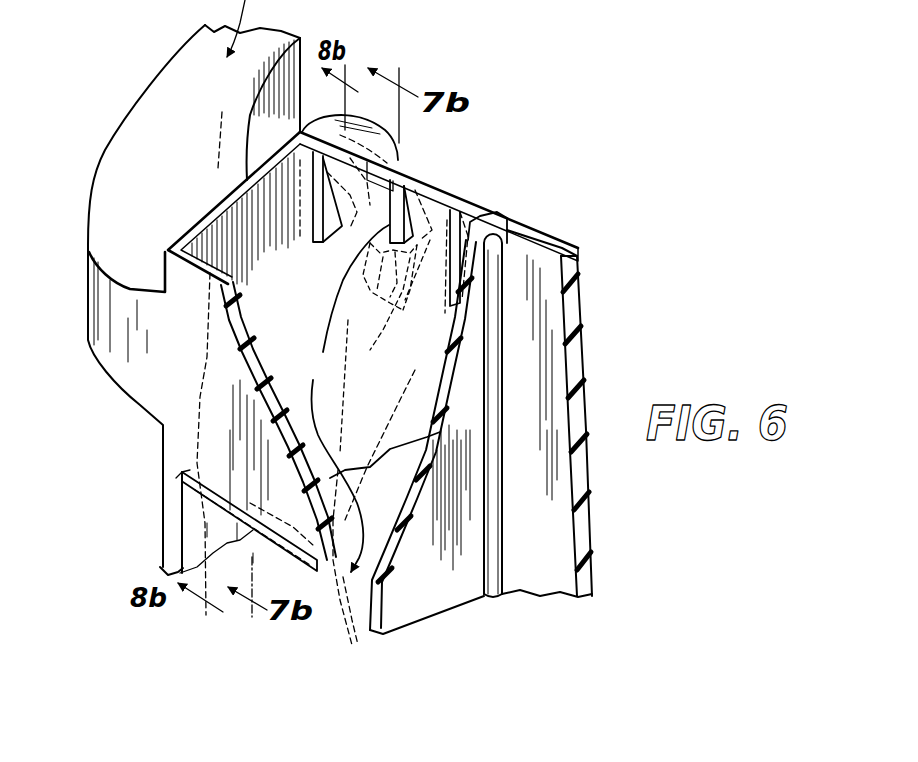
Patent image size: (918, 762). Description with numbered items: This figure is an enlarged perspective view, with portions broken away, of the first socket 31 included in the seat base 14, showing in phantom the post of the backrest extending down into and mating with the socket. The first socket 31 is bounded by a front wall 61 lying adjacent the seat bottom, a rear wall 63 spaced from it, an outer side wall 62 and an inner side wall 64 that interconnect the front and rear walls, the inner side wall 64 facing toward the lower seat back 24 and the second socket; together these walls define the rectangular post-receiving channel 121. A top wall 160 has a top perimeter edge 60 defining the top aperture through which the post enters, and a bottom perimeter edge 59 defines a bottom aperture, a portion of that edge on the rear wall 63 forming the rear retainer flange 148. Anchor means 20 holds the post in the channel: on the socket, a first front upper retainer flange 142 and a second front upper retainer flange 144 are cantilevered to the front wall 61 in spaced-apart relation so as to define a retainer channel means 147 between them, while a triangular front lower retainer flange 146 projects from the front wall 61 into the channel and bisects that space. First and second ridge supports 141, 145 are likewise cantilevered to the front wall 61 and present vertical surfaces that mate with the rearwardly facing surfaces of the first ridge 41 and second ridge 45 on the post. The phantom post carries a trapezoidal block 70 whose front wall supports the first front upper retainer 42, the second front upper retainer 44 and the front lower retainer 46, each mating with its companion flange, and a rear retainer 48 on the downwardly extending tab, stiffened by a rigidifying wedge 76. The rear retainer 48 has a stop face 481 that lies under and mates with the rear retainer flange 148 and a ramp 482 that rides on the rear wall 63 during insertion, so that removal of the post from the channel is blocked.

The seat base 14 is at (99, 156).
The top wall 160 is at (300, 124).
The post-receiving channel 121 is at (254, 221).
The outer side wall 62 is at (150, 262).
The top perimeter edge 60 is at (184, 229).
The retainer channel means 147 is at (393, 164).
The first front upper retainer 42 is at (394, 128).
The first front upper retainer flange 142 is at (354, 130).
The second front upper retainer 44 is at (457, 173).
The second front upper retainer flange 144 is at (478, 197).
The front wall 61 is at (488, 203).
The second ridge support 145 is at (467, 283).
The lower seat back 24 is at (530, 332).
The inner side wall 64 is at (433, 603).
The bottom perimeter edge 59 is at (408, 630).
The rear wall 63 is at (300, 500).
The trapezoidal block 70 is at (280, 352).
The first socket 31 is at (225, 420).
The rear retainer flange 148 is at (213, 498).
The stop face 481 is at (292, 564).
The ramp 482 is at (320, 574).
The rigidifying wedge 76 is at (509, 10).
The rear retainer 48 is at (356, 571).
The anchor means 20 is at (345, 398).
The first ridge 41 is at (295, 234).
The first ridge support 141 is at (388, 226).
The front lower retainer flange 146 is at (358, 299).
The front lower retainer 46 is at (385, 346).
The second ridge 45 is at (443, 325).